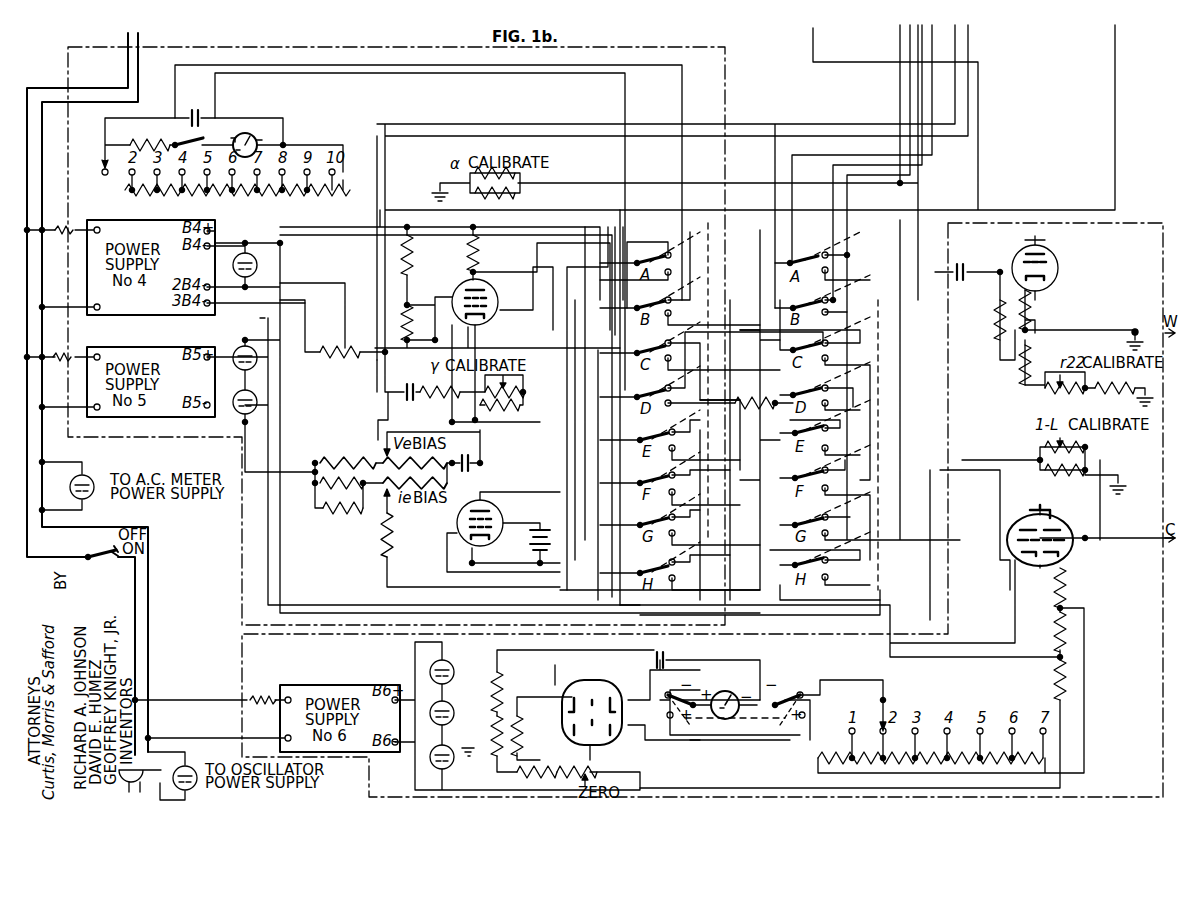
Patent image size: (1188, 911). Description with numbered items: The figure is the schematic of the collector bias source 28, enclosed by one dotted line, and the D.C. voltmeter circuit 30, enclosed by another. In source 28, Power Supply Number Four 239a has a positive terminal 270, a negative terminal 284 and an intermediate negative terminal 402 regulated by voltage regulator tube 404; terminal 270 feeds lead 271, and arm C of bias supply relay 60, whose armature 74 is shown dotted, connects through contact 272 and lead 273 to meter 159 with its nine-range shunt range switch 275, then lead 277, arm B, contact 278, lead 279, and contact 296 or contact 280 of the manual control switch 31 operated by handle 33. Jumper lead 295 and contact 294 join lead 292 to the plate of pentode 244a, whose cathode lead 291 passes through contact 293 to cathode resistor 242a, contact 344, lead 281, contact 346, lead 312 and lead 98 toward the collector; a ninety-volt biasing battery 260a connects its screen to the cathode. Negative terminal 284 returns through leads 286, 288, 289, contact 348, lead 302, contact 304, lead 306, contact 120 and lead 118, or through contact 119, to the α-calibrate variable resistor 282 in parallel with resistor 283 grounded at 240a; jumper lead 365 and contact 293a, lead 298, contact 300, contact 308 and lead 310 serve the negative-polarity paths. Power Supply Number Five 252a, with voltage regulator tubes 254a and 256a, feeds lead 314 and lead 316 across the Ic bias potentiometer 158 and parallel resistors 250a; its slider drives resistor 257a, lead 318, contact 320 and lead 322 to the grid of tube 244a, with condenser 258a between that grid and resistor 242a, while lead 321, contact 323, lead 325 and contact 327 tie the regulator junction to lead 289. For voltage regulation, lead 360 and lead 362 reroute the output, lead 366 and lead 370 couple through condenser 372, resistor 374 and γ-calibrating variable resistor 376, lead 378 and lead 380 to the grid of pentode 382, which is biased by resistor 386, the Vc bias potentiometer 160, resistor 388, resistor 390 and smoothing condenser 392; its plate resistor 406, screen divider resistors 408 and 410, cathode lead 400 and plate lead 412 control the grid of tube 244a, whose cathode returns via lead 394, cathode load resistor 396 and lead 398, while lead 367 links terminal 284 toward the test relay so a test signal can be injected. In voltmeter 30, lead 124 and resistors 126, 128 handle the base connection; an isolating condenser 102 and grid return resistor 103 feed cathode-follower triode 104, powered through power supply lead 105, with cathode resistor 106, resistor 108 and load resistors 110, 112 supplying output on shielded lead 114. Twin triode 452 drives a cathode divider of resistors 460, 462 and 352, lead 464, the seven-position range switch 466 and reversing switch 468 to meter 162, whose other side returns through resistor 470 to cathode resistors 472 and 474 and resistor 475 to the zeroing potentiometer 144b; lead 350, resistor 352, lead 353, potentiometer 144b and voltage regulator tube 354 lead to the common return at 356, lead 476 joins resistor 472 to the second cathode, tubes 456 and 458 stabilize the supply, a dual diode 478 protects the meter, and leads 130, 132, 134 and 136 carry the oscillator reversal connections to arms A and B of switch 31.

The collector bias supply 28 is at (355, 45).
The D.C. voltmeter circuit 30 is at (1166, 207).
The manual control switch 31 is at (855, 280).
The handle 33 is at (879, 316).
The bias supply relay 60 is at (665, 213).
The armature 74 is at (708, 238).
The lead 98 is at (1082, 518).
The isolating condenser 102 is at (975, 265).
The grid return resistor 103 is at (990, 350).
The triode 104 is at (1058, 260).
The power supply lead 105 is at (1038, 237).
The cathode resistor 106 is at (1030, 330).
The resistor 108 is at (1020, 387).
The variable load resistor 110 is at (1054, 406).
The fixed load resistor 112 is at (1128, 398).
The shielded lead 114 is at (1104, 328).
The lead 118 is at (910, 562).
The switch contact 119 is at (834, 538).
The switch contact 120 is at (814, 577).
The lead 124 is at (813, 36).
The fixed resistor 126 is at (1038, 460).
The calibrating resistor 128 is at (1087, 448).
The lead 130 is at (910, 44).
The lead 132 is at (943, 52).
The lead 134 is at (932, 88).
The lead 136 is at (922, 72).
The zeroing potentiometer 144b is at (584, 753).
The Ic bias potentiometer 158 is at (388, 480).
The meter 159 is at (259, 126).
The Vc bias potentiometer 160 is at (384, 459).
The meter 162 is at (725, 690).
The Power Supply Number Four 239a is at (148, 210).
The ground 240a is at (433, 194).
The cathode resistor 242a is at (750, 388).
The pentode tube 244a is at (500, 508).
The parallel resistors 250a is at (320, 512).
The Power Supply Number Five 252a is at (160, 334).
The voltage regulator tube 254a is at (262, 336).
The voltage regulator tube 256a is at (258, 402).
The resistor 257a is at (384, 542).
The condenser 258a is at (738, 574).
The biasing battery 260a is at (532, 549).
The positive terminal 270 is at (207, 225).
The lead 271 is at (311, 224).
The contact 272 is at (685, 364).
The lead 273 is at (175, 92).
The range switch 275 is at (274, 221).
The lead 277 is at (222, 100).
The contact 278 is at (682, 314).
The lead 279 is at (739, 357).
The contact 280 is at (832, 379).
The lead 281 is at (784, 512).
The α-calibrate variable resistor 282 is at (521, 176).
The resistor 283 is at (521, 196).
The negative terminal 284 is at (215, 242).
The lead 286 is at (283, 246).
The lead 288 is at (288, 578).
The lead 289 is at (858, 410).
The lead 291 is at (476, 575).
The lead 292 is at (526, 490).
The contact 293 is at (666, 407).
The contact 293a is at (672, 420).
The contact 294 is at (654, 340).
The jumper lead 295 is at (729, 334).
The contact 296 is at (813, 342).
The lead 298 is at (886, 314).
The contact 300 is at (832, 456).
The lead 302 is at (734, 432).
The contact 304 is at (664, 456).
The lead 306 is at (613, 418).
The contact 308 is at (822, 576).
The lead 310 is at (870, 518).
The lead 312 is at (930, 437).
The lead 314 is at (324, 368).
The lead 316 is at (244, 428).
The lead 318 is at (386, 570).
The contact 320 is at (682, 576).
The lead 321 is at (271, 425).
The lead 322 is at (447, 554).
The contact 323 is at (678, 541).
The lead 325 is at (738, 474).
The contact 327 is at (836, 487).
The contact 344 is at (820, 384).
The contact 346 is at (778, 501).
The contact 348 is at (832, 416).
The lead 350 is at (913, 658).
The resistor 352 is at (1058, 672).
The lead 353 is at (1058, 696).
The voltage regulator tube 354 is at (447, 776).
The common return circuit point 356 is at (476, 765).
The lead 360 is at (570, 224).
The lead 362 is at (734, 532).
The jumper lead 365 is at (734, 412).
The lead 366 is at (390, 134).
The lead 367 is at (295, 222).
The lead 370 is at (388, 151).
The coupling condenser 372 is at (426, 401).
The resistor 374 is at (459, 389).
The γ-calibrating variable resistor 376 is at (482, 406).
The lead 378 is at (566, 291).
The lead 380 is at (503, 313).
The pentode 382 is at (490, 285).
The resistor 386 is at (441, 473).
The resistor 388 is at (335, 460).
The resistor 390 is at (503, 420).
The condenser 392 is at (215, 308).
The lead 394 is at (494, 349).
The cathode load resistor 396 is at (335, 327).
The lead 398 is at (305, 300).
The lead 400 is at (294, 287).
The intermediate negative terminal 402 is at (215, 291).
The voltage regulator tube 404 is at (260, 264).
The resistor 406 is at (499, 243).
The resistor 408 is at (432, 257).
The resistor 410 is at (414, 366).
The lead 412 is at (482, 272).
The twin triode 452 is at (1052, 514).
The voltage regulator tube 456 is at (469, 695).
The voltage regulator tube 458 is at (469, 655).
The resistor 460 is at (1065, 589).
The resistor 462 is at (1060, 634).
The lead 464 is at (1085, 694).
The range switch 466 is at (978, 702).
The reversing switch 468 is at (790, 776).
The resistor 470 is at (519, 737).
The cathode resistor 472 is at (499, 691).
The cathode resistor 474 is at (497, 737).
The resistor 475 is at (523, 780).
The lead 476 is at (1015, 604).
The dual tube 478 is at (594, 670).